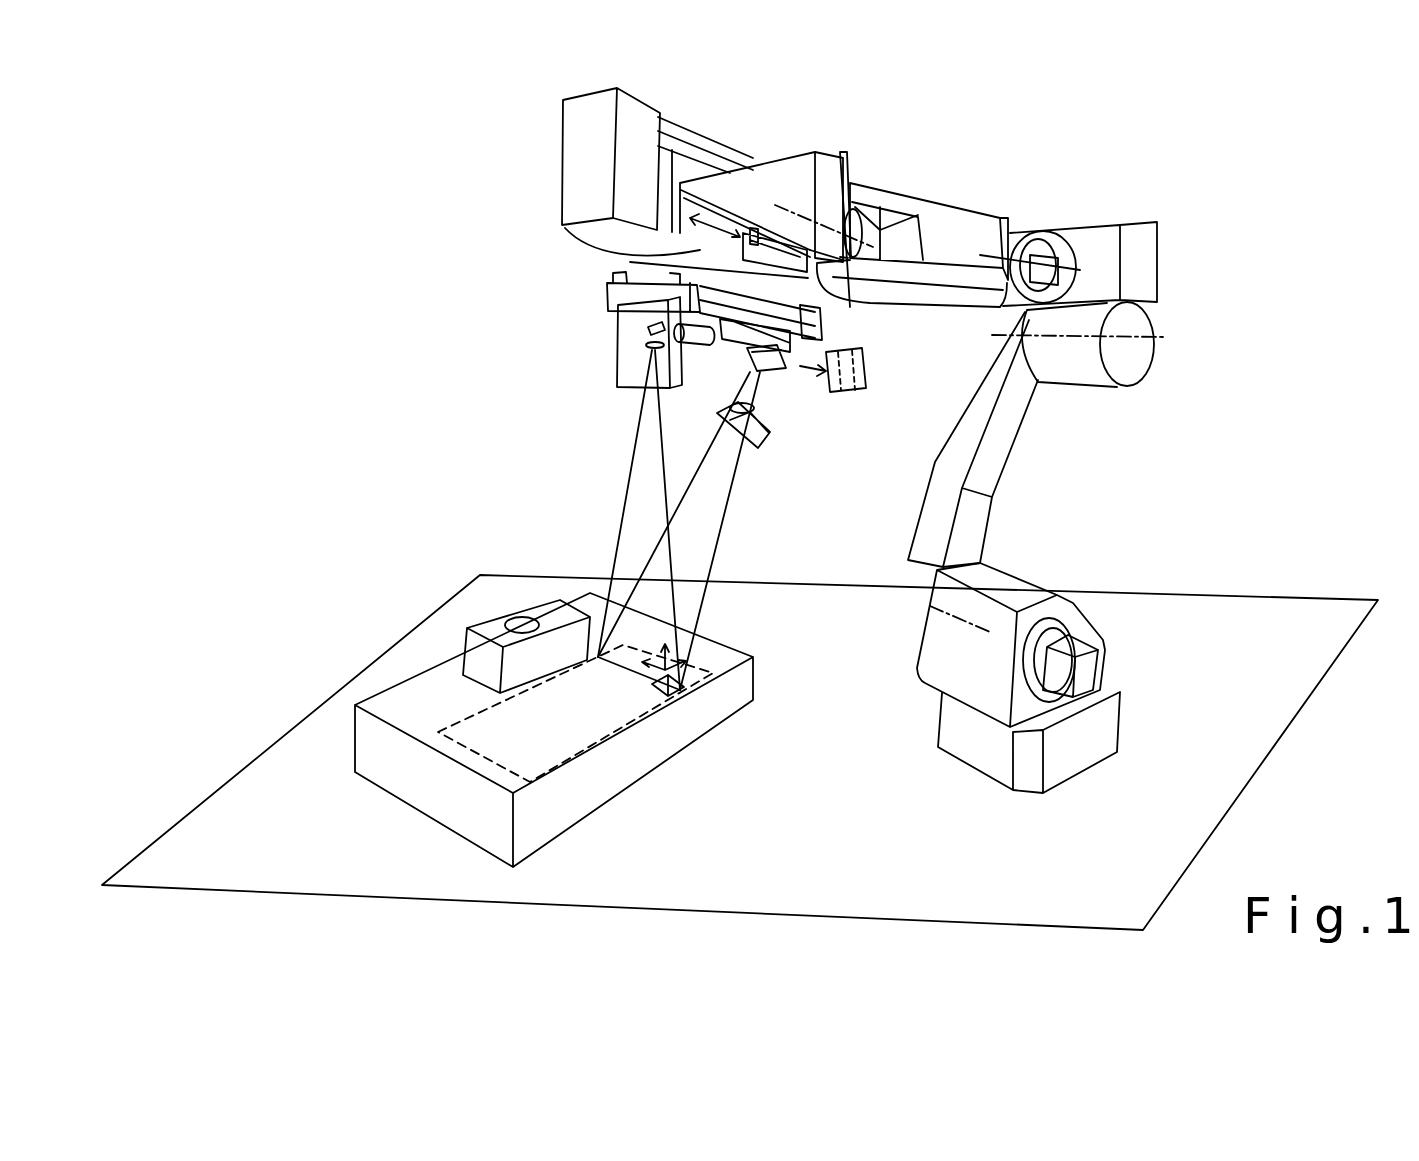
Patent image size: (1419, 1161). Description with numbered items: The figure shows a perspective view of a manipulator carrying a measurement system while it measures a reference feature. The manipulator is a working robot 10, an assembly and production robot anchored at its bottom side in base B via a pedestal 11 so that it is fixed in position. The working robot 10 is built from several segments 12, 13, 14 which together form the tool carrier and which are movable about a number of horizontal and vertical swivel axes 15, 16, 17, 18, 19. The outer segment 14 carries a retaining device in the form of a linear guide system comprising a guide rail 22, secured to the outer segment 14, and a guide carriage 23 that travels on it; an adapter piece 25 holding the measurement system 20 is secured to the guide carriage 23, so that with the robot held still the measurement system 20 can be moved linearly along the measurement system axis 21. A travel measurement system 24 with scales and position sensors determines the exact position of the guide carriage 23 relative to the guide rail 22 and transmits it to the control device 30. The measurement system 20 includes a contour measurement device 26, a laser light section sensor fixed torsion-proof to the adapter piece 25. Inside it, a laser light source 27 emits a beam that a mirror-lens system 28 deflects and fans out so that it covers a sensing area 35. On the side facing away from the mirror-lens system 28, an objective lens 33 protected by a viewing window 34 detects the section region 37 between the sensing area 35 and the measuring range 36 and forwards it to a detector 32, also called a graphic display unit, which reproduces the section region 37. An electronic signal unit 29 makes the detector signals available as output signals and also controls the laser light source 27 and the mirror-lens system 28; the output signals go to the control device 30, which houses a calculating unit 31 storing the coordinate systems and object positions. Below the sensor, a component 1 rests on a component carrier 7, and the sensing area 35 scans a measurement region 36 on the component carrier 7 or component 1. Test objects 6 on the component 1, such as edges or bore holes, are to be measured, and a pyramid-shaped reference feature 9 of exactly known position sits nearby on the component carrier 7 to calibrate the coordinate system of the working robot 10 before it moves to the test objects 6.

The component 1 is at (470, 665).
The test objects 6 is at (577, 627).
The component carrier 7 is at (593, 793).
The reference feature 9 is at (652, 700).
The working robot 10 is at (1196, 318).
The pedestal 11 is at (967, 732).
The segment 12 is at (985, 512).
The segment 13 is at (957, 233).
The outer segment 14 is at (695, 153).
The swivel axis 15 is at (903, 598).
The swivel axis 16 is at (1107, 337).
The swivel axis 17 is at (987, 257).
The swivel axis 18 is at (844, 158).
The swivel axis 19 is at (868, 240).
The measurement system 20 is at (577, 309).
The measurement system axis 21 is at (653, 242).
The guide rail 22 is at (683, 178).
The guide carriage 23 is at (778, 252).
The travel measurement system 24 is at (748, 240).
The adapter piece 25 is at (813, 323).
The contour measurement device 26 is at (622, 372).
The laser light source 27 is at (690, 350).
The mirror-lens system 28 is at (635, 339).
The electronic signal unit 29 is at (813, 338).
The control device 30 is at (833, 385).
The calculating unit 31 is at (863, 372).
The detector 32 is at (788, 370).
The objective lens 33 is at (780, 440).
The viewing window 34 is at (743, 452).
The sensing area 35 is at (640, 523).
The measurement region 36 is at (467, 748).
The section region 37 is at (603, 673).
The base B is at (1245, 762).